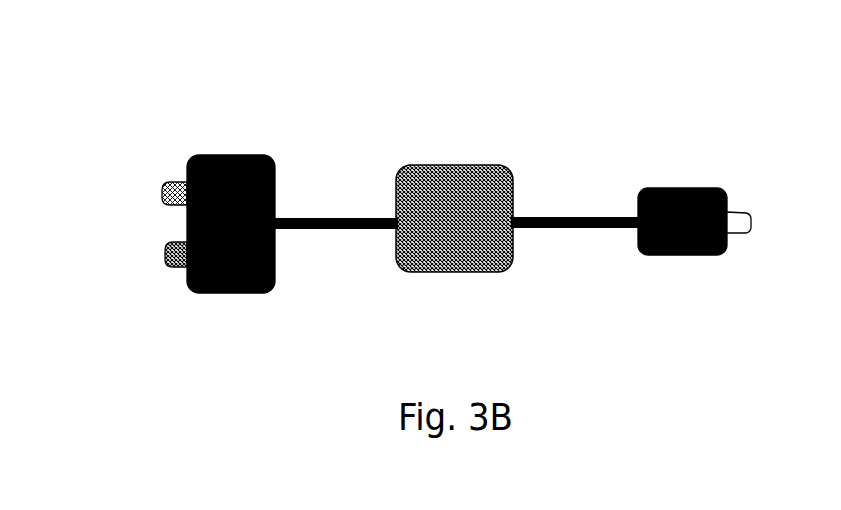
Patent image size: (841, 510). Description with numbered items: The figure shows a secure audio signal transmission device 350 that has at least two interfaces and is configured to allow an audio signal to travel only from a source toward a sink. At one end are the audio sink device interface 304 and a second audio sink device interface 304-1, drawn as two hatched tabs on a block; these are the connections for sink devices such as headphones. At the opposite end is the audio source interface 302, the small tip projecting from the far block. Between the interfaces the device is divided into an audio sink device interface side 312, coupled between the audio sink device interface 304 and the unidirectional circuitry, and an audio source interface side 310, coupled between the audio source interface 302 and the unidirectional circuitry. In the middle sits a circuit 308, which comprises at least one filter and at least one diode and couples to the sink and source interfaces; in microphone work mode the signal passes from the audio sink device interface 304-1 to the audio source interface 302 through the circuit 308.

The secure audio signal transmission device 350 is at (538, 118).
The audio sink device interface 304 is at (162, 192).
The audio sink device interface 304-1 is at (168, 266).
The audio sink device interface side 312 is at (317, 218).
The circuit 308 is at (492, 272).
The audio source interface side 310 is at (595, 217).
The audio source interface 302 is at (752, 220).